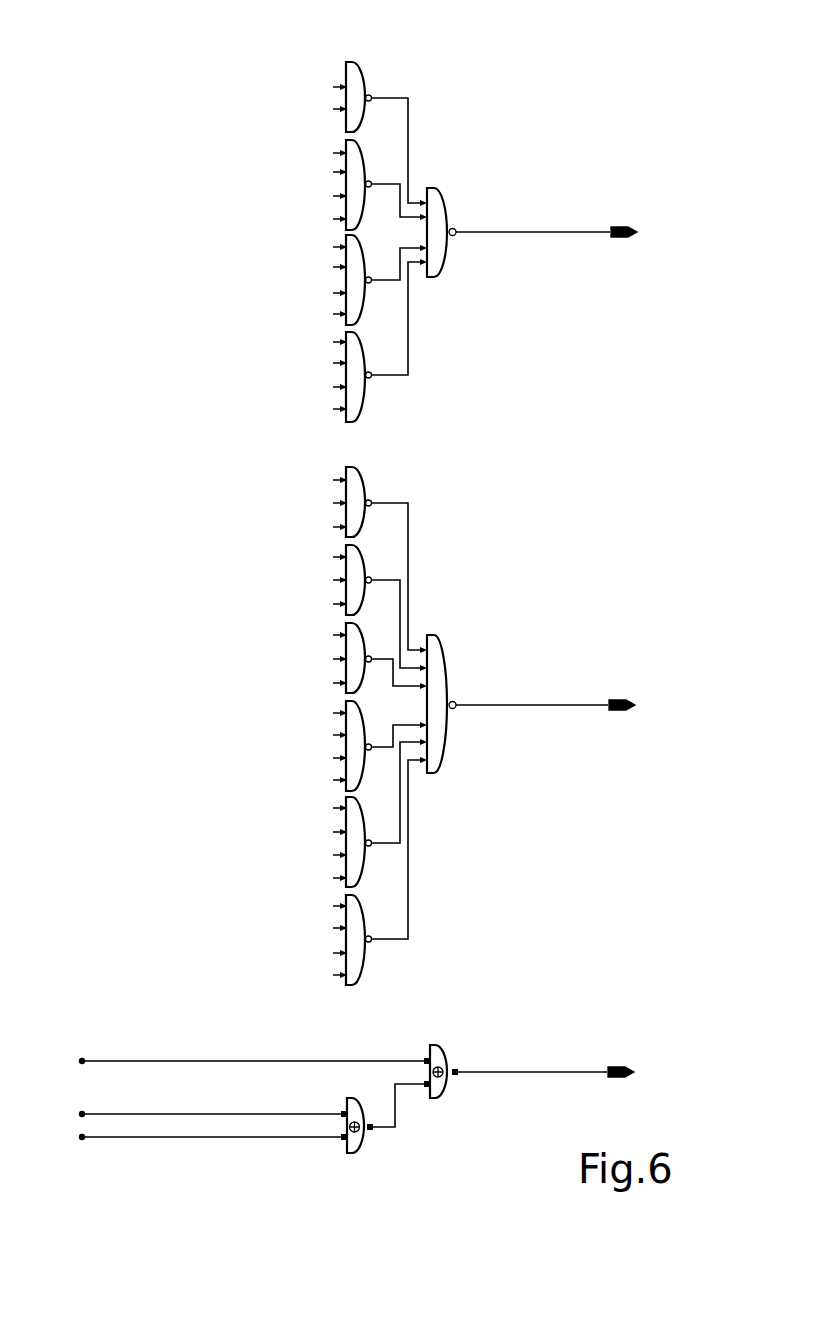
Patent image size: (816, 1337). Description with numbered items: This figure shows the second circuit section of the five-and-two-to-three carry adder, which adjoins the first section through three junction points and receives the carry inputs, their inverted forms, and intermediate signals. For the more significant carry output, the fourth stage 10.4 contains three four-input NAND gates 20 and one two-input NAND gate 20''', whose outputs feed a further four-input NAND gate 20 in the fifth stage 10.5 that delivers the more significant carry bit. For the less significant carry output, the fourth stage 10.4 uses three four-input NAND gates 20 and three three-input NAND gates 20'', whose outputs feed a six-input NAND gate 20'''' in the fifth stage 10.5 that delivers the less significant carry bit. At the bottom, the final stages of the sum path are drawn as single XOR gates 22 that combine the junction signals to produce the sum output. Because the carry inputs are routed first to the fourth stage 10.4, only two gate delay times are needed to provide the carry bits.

The NAND gate 20 is at (474, 496).
The NAND gate 20'' is at (353, 569).
The NAND gate 20''' is at (353, 132).
The NAND gate 20'''' is at (540, 731).
The XOR gate 22 is at (364, 1143).
The fourth stage 10.4 is at (474, 212).
The fifth stage 10.5 is at (541, 186).